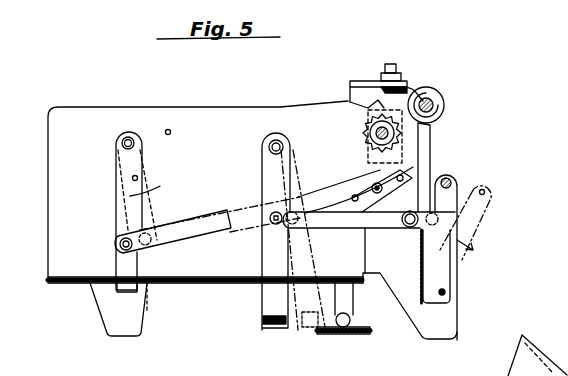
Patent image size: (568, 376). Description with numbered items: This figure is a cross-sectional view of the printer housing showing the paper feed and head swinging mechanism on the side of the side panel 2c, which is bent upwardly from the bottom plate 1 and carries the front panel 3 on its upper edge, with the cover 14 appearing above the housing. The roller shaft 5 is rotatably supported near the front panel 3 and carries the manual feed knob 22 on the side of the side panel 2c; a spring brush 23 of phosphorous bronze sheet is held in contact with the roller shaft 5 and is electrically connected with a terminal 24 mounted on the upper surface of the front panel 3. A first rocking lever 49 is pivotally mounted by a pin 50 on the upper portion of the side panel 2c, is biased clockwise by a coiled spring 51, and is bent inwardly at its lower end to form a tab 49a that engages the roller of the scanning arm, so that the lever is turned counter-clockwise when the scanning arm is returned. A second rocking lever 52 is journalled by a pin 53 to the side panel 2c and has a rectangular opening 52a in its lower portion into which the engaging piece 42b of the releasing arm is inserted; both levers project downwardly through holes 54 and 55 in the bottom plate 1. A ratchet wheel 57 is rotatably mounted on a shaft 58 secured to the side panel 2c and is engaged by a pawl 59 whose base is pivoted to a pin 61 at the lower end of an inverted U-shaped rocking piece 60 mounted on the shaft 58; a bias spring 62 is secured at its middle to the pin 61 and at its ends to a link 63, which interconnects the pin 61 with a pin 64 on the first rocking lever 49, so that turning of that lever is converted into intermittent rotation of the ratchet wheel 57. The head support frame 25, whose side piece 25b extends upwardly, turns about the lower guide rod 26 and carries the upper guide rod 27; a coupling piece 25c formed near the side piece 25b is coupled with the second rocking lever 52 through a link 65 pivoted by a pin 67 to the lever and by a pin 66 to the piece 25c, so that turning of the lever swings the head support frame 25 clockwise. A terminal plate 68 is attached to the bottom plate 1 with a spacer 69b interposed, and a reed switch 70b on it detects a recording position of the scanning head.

The bottom plate 1 is at (55, 286).
The side panel 2c is at (74, 108).
The front panel 3 is at (363, 80).
The roller shaft 5 is at (444, 110).
The cover 14 is at (520, 337).
The manual feed knob 22 is at (442, 98).
The spring brush 23 is at (417, 90).
The terminal 24 is at (403, 56).
The head support frame 25 is at (460, 266).
The side piece 25b is at (455, 200).
The coupling piece 25c is at (420, 250).
The lower guide rod 26 is at (447, 292).
The upper guide rod 27 is at (450, 178).
The engaging piece 42b is at (290, 328).
The first rocking lever 49 is at (116, 176).
The tab 49a is at (137, 292).
The pin 50 is at (128, 131).
The coiled spring 51 is at (165, 130).
The second rocking lever 52 is at (262, 167).
The rectangular opening 52a is at (262, 330).
The pin 53 is at (278, 131).
The hole 54 is at (85, 284).
The hole 55 is at (228, 284).
The ratchet wheel 57 is at (348, 97).
The shaft 58 is at (365, 125).
The pawl 59 is at (440, 162).
The rocking piece 60 is at (360, 144).
The pin 61 is at (368, 229).
The bias spring 62 is at (375, 170).
The link 63 is at (206, 212).
The pin 64 is at (117, 244).
The link 65 is at (336, 228).
The pin 66 is at (366, 240).
The pin 67 is at (268, 232).
The terminal plate 68 is at (368, 334).
The spacer 69b is at (353, 298).
The reed switch 70b is at (342, 336).